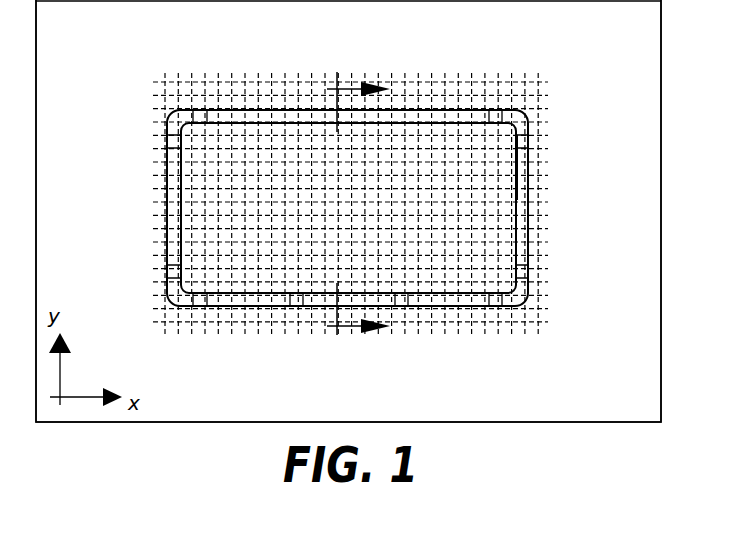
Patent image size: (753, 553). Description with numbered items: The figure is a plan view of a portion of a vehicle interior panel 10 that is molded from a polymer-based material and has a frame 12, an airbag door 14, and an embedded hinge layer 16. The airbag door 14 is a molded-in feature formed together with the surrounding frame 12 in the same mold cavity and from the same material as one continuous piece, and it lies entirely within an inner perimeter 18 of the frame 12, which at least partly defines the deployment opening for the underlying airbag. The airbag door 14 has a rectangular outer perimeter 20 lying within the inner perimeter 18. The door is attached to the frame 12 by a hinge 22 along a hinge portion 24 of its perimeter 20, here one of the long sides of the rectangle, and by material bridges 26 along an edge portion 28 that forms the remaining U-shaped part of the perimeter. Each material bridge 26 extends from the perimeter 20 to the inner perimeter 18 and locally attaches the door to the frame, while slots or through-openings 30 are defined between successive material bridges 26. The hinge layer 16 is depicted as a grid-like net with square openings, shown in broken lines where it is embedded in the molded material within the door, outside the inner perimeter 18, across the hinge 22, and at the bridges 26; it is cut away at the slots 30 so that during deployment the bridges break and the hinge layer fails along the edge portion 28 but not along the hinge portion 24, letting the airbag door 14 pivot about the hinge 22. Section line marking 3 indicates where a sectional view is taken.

The panel 10 is at (84, 83).
The frame 12 is at (108, 255).
The airbag door 14 is at (180, 186).
The hinge layer 16 is at (458, 77).
The inner perimeter 18 is at (523, 238).
The outer perimeter 20 is at (455, 313).
The hinge 22 is at (298, 122).
The hinge portion 24 is at (220, 122).
The material bridge 26 is at (200, 302).
The edge portion 28 is at (517, 167).
The through-openings 30 is at (263, 303).
The section line 3- 3 is at (358, 207).